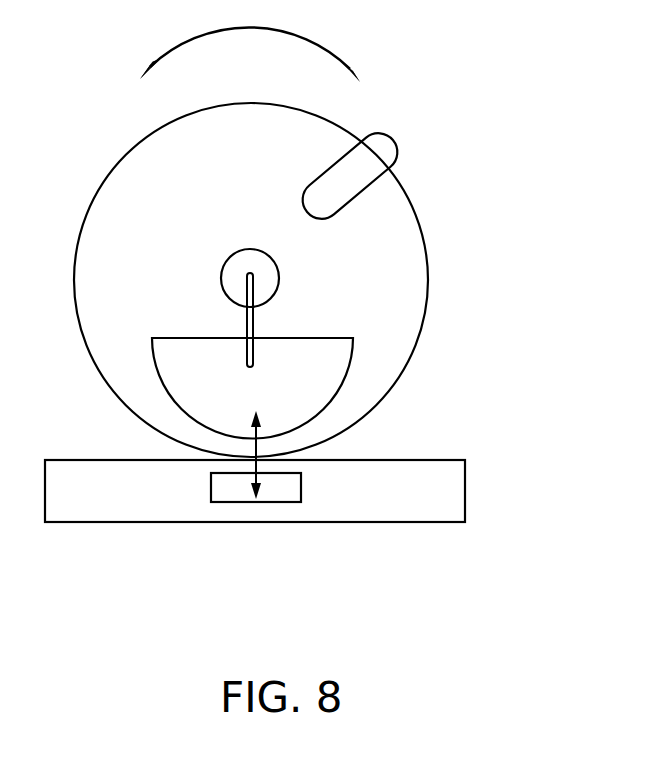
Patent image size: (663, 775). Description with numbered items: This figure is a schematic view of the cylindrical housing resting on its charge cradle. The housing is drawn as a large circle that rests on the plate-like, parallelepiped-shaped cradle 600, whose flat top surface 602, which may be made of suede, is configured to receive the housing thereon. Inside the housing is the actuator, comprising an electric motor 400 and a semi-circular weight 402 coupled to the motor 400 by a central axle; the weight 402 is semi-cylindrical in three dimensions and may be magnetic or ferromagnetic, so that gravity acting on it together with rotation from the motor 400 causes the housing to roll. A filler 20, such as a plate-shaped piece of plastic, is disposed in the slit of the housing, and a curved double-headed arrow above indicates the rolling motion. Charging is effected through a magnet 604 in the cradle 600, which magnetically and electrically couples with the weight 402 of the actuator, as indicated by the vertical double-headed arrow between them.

The filler 20 is at (391, 143).
The electric motor 400 is at (240, 284).
The semi-circular weight 402 is at (330, 372).
The cradle 600 is at (466, 492).
The flat top surface 602 is at (438, 468).
The magnet 604 is at (278, 486).